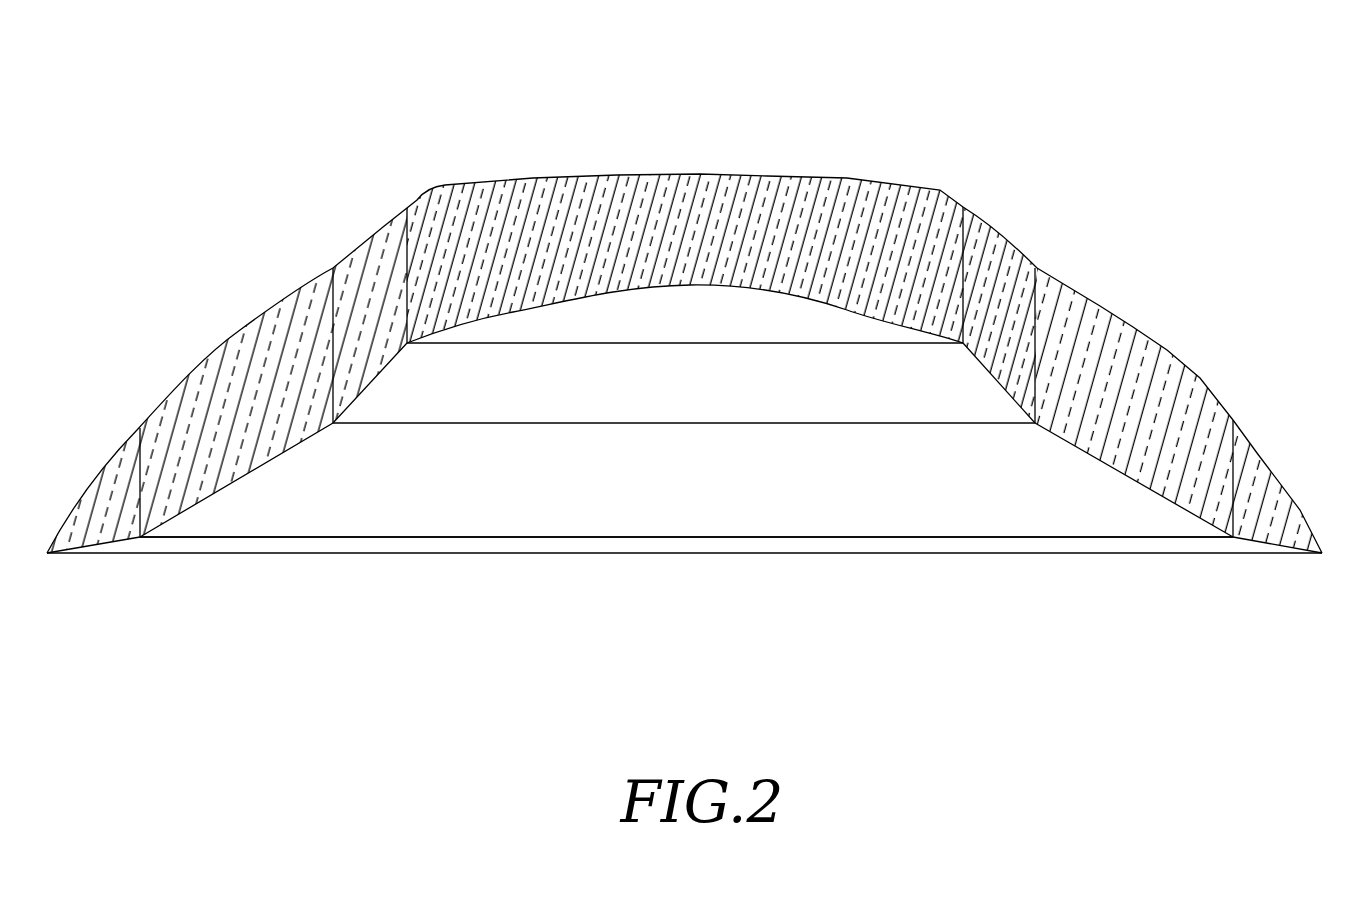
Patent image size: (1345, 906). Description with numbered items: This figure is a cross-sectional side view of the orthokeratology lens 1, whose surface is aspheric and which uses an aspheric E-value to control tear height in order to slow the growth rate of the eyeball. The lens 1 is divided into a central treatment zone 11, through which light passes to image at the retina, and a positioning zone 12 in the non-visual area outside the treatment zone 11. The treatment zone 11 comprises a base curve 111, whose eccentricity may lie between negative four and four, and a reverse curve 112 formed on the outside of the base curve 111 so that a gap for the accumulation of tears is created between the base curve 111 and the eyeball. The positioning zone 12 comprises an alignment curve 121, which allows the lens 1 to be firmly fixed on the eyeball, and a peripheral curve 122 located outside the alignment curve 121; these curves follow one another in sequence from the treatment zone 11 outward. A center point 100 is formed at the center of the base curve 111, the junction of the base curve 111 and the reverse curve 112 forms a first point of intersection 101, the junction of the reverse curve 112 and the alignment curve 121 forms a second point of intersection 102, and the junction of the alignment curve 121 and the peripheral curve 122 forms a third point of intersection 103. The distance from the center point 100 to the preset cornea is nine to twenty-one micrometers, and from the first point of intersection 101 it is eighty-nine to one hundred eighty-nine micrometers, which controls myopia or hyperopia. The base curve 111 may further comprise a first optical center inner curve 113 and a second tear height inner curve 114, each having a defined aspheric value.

The lens 1 is at (368, 166).
The treatment zone 11 is at (546, 276).
The base curve 111 is at (812, 238).
The reverse curve 112 is at (997, 282).
The positioning zone 12 is at (1179, 394).
The alignment curve 121 is at (1132, 367).
The peripheral curve 122 is at (1275, 497).
The center point 100 is at (685, 470).
The first point of intersection 101 is at (963, 343).
The second point of intersection 102 is at (1035, 423).
The third point of intersection 103 is at (1233, 537).
The first optical center inner curve 113 is at (591, 312).
The second tear height inner curve 114 is at (893, 325).